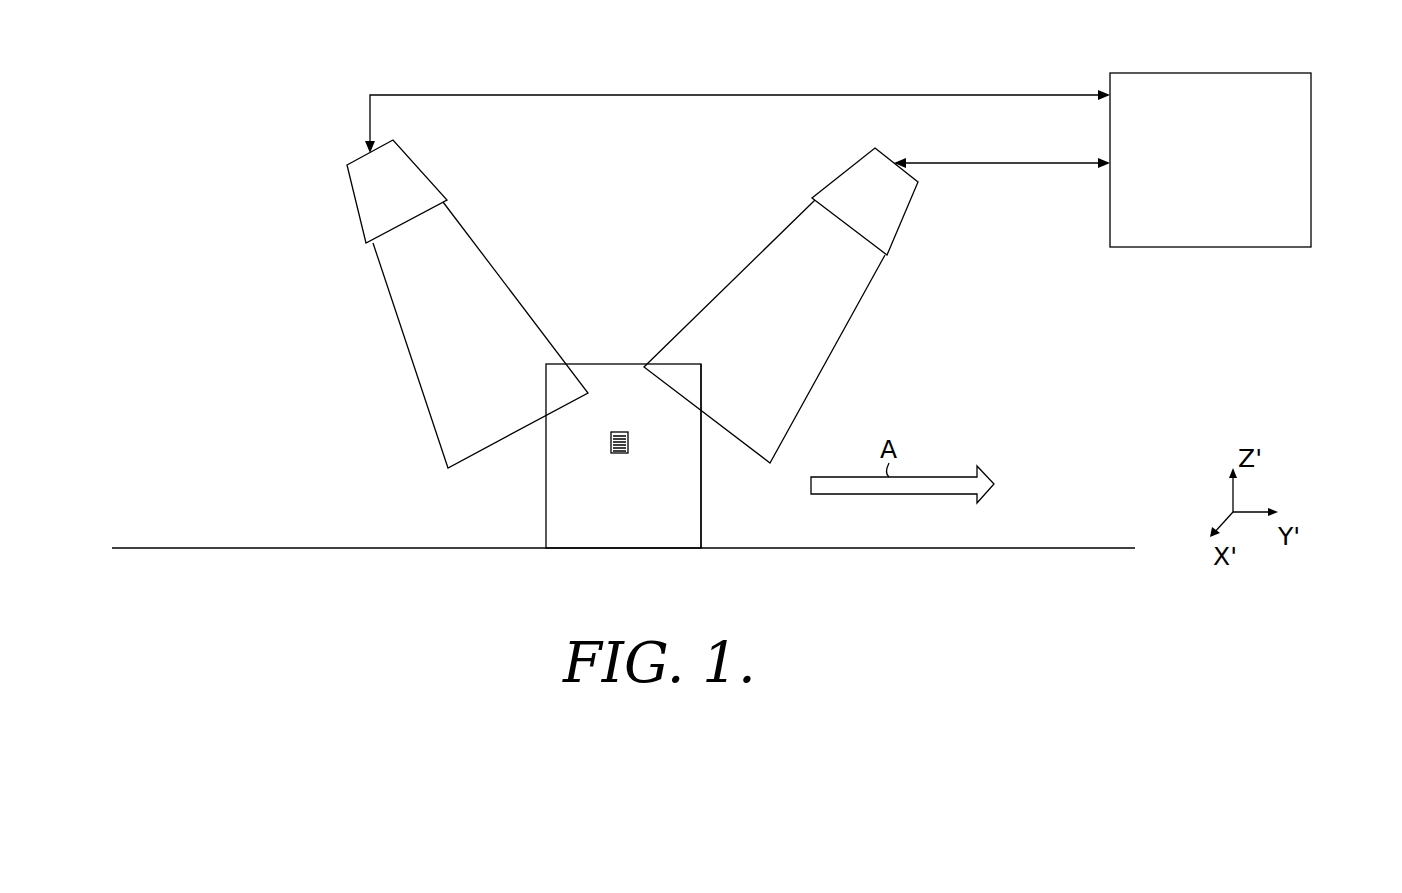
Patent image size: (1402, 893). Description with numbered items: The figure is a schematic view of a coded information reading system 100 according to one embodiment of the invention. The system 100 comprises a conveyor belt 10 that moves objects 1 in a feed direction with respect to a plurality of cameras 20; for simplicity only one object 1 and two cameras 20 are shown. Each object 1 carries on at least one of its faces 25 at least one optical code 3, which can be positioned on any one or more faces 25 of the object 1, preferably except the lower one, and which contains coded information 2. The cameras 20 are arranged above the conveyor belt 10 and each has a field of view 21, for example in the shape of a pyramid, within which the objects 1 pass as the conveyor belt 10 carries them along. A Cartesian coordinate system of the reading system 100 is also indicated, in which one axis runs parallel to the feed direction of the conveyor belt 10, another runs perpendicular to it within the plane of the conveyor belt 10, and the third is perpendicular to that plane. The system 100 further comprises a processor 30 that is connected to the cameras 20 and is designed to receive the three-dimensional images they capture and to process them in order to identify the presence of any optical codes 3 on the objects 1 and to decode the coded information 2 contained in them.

The coded information reading system 100 is at (178, 213).
The conveyor belt 10 is at (208, 547).
The object 1 is at (540, 503).
The face 25 is at (694, 513).
The coded information 2 is at (607, 381).
The optical code 3 is at (618, 431).
The camera 20 is at (418, 165).
The field of view 21 is at (498, 275).
The processor 30 is at (1311, 158).